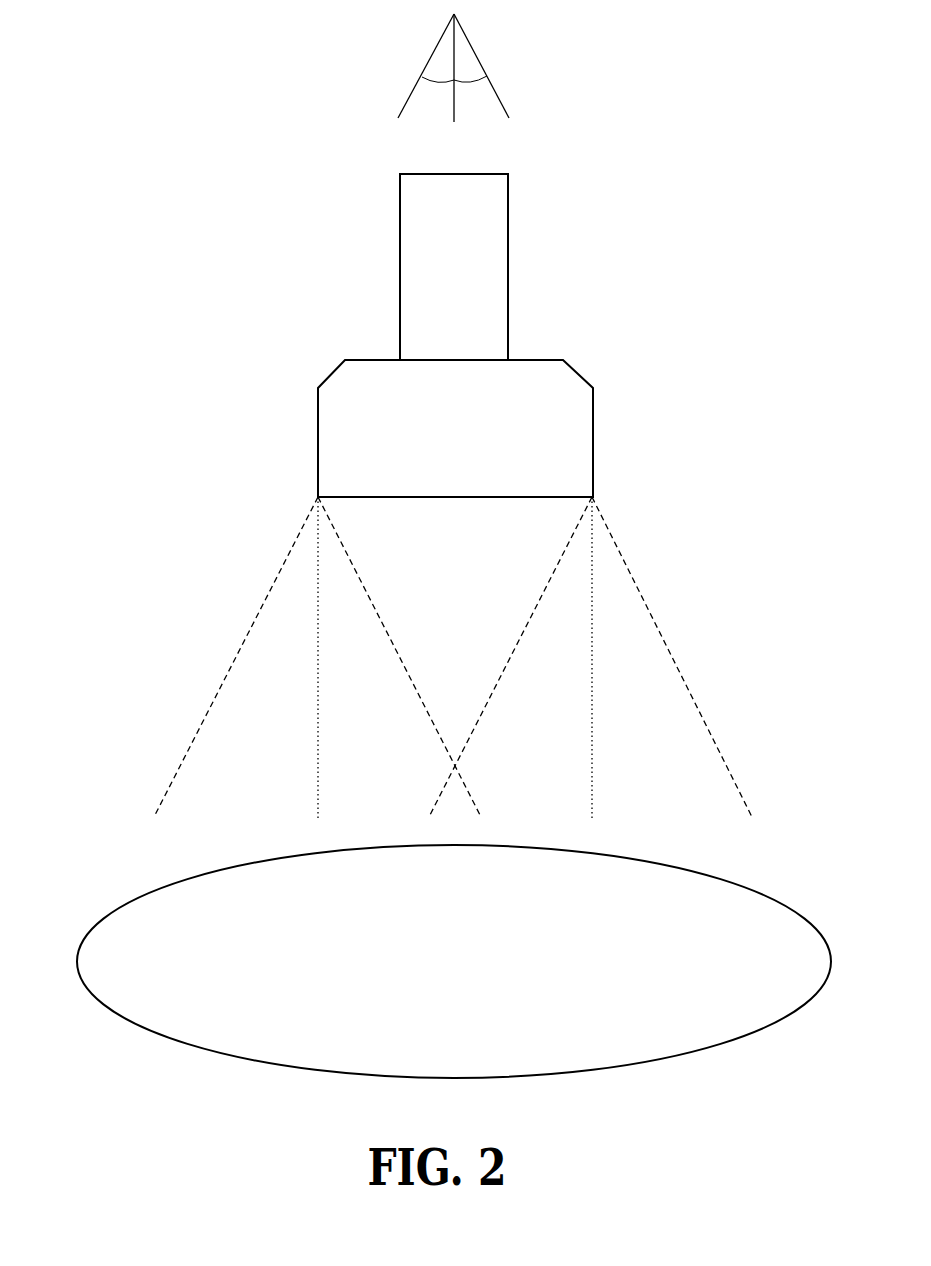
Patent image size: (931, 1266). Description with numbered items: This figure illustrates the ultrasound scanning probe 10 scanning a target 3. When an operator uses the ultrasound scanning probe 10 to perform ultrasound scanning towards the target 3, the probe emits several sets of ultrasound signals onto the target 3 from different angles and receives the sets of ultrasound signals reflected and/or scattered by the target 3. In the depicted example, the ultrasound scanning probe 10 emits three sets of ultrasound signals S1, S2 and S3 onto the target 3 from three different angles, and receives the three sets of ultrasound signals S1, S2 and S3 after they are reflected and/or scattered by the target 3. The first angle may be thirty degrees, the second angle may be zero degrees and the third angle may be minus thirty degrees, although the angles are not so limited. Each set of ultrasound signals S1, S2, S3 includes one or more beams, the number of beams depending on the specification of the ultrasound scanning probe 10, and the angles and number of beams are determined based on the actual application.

The ultrasound scanning probe 10 is at (508, 255).
The target 3 is at (102, 920).
The first set of ultrasound signals S1 is at (259, 612).
The second set of ultrasound signals S2 is at (317, 719).
The third set of ultrasound signals S3 is at (658, 633).